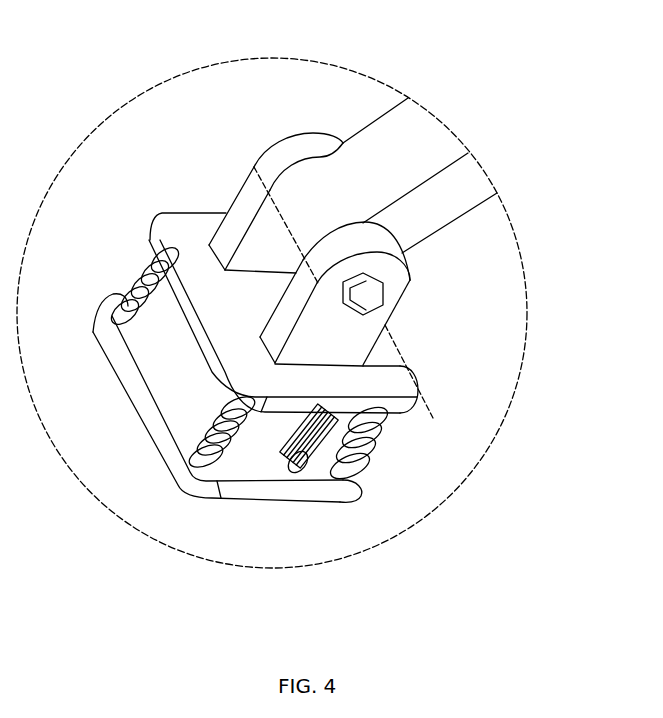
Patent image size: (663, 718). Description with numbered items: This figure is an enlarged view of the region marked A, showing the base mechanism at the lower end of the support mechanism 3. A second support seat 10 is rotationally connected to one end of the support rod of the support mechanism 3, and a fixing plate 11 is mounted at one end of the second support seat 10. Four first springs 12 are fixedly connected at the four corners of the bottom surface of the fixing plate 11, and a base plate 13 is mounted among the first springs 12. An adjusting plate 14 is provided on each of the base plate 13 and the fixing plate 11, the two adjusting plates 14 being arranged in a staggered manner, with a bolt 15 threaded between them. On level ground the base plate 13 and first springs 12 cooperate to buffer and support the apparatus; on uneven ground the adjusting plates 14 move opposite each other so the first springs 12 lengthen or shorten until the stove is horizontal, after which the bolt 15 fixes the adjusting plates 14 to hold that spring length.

The enlarged detail region A is at (532, 302).
The support mechanism 3 is at (396, 143).
The second support seat 10 is at (320, 353).
The fixing plate 11 is at (387, 403).
The first spring 12 is at (381, 452).
The base plate 13 is at (226, 500).
The adjusting plate 14 is at (297, 478).
The bolt 15 is at (317, 462).